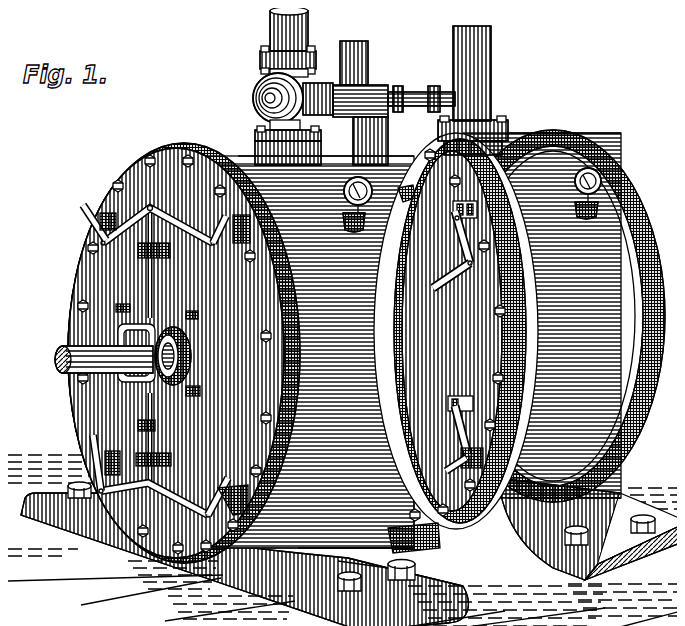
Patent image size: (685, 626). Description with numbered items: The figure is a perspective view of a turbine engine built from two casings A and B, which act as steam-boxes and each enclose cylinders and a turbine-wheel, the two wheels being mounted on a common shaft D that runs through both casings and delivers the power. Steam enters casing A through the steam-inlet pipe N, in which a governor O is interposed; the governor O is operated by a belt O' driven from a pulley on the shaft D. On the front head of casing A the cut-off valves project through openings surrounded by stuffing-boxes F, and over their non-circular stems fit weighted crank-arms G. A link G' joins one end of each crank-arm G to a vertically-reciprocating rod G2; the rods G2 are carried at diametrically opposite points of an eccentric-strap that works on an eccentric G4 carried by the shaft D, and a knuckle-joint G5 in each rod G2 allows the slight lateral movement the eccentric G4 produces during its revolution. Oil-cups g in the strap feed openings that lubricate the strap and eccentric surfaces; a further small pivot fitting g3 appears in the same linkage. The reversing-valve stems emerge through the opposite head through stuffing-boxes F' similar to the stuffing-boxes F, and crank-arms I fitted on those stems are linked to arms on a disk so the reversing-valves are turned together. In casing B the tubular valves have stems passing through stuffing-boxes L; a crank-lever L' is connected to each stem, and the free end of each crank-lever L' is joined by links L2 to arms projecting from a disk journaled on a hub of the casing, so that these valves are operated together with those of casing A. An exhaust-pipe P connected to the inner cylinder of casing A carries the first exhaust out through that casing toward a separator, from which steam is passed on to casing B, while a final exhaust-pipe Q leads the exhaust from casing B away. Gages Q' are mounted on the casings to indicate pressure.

The casing A is at (282, 331).
The casing B is at (519, 316).
The shaft D is at (16, 350).
The stuffing-box F is at (160, 360).
The stuffing-box F' is at (231, 245).
The weighted crank-arm G is at (170, 362).
The link G' is at (123, 380).
The vertically-reciprocating rod G2 is at (140, 279).
The eccentric G4 is at (112, 325).
The knuckle-joint G5 is at (150, 252).
The oil-cup g is at (149, 316).
The pivot pin g3 is at (205, 390).
The crank-arm I is at (406, 190).
The stuffing-box L is at (475, 346).
The crank-lever L' is at (478, 406).
The link L2 is at (468, 265).
The steam-inlet pipe N is at (262, 22).
The governor O is at (275, 117).
The belt O' is at (379, 103).
The exhaust-pipe P is at (433, 522).
The final exhaust-pipe Q is at (480, 90).
The gage Q' is at (485, 201).